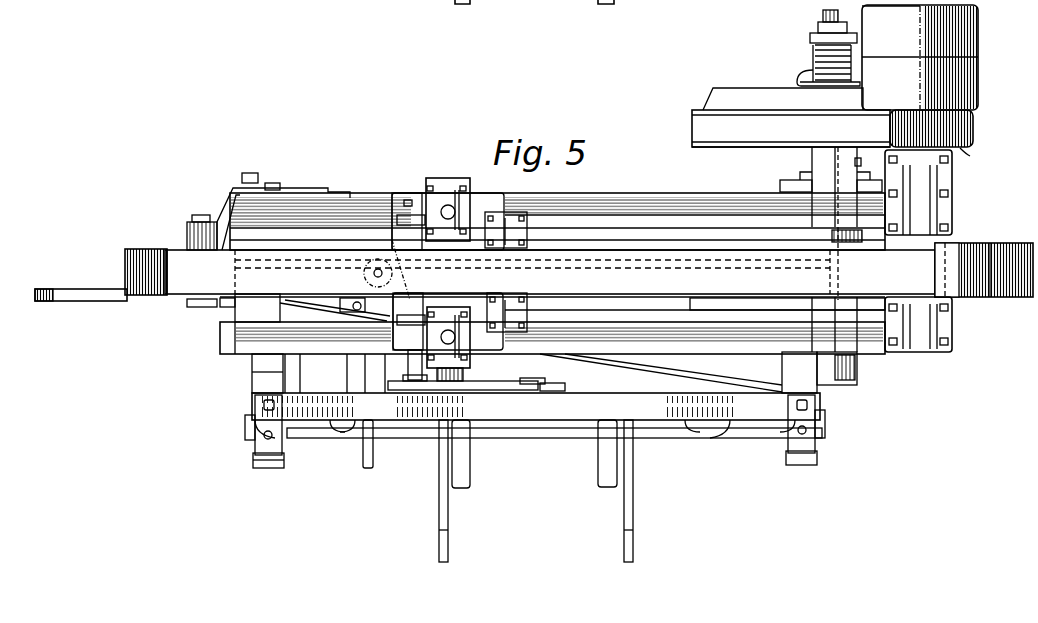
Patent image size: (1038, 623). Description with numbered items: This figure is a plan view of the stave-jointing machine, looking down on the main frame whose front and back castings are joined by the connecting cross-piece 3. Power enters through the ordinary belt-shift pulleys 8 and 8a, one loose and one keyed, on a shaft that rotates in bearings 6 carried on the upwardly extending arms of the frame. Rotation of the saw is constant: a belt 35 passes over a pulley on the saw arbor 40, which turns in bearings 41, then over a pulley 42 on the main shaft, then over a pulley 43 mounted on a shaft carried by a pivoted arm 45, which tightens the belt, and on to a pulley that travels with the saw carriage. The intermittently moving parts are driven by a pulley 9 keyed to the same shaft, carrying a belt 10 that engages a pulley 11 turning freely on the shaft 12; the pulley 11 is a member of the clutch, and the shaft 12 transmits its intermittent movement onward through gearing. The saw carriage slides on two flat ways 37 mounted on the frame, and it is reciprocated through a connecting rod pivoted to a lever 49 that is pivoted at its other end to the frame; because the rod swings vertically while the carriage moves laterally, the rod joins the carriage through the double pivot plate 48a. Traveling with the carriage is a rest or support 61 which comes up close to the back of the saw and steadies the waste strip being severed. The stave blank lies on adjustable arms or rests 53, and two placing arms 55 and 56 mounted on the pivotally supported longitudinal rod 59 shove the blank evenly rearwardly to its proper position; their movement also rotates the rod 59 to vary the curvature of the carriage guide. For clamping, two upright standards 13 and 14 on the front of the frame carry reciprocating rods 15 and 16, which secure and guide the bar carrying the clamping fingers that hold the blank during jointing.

The connecting cross-piece 3 is at (288, 308).
The bearings 6 is at (918, 251).
The belt-shift pulley 8 is at (920, 57).
The belt-shift pulley 8a is at (891, 20).
The pulley 9 is at (972, 154).
The belt 10 is at (832, 117).
The pulley 11 is at (755, 150).
The shaft 12 is at (536, 406).
The upright standard 13 is at (272, 372).
The upright standard 14 is at (795, 373).
The reciprocating rod 15 is at (262, 437).
The reciprocating rod 16 is at (806, 432).
The belt 35 is at (550, 272).
The flat ways 37 is at (552, 273).
The saw arbor 40 is at (455, 378).
The bearings 41 is at (447, 188).
The pulley 42 is at (985, 300).
The pulley 43 is at (158, 302).
The pivoted arm 45 is at (228, 200).
The double pivot plate 48a is at (383, 240).
The lever 49 is at (100, 303).
The arms or rests 53 is at (480, 460).
The placing arm 55 is at (448, 528).
The placing arm 56 is at (624, 517).
The longitudinal bar 59 is at (545, 440).
The rest or support 61 is at (500, 386).